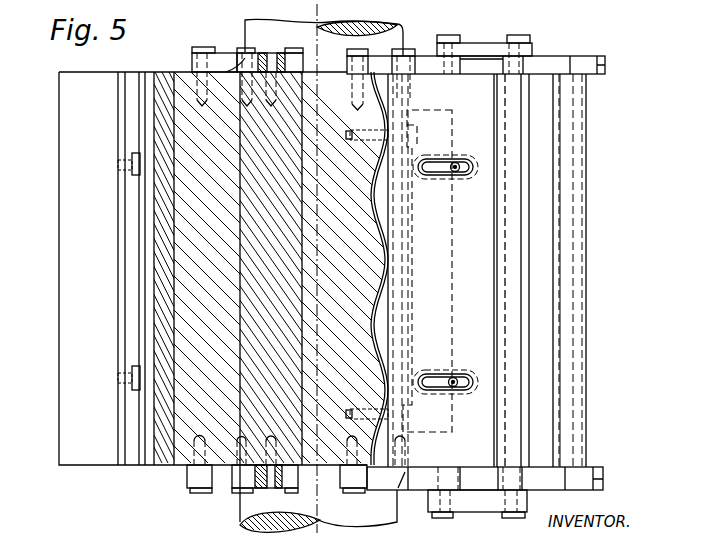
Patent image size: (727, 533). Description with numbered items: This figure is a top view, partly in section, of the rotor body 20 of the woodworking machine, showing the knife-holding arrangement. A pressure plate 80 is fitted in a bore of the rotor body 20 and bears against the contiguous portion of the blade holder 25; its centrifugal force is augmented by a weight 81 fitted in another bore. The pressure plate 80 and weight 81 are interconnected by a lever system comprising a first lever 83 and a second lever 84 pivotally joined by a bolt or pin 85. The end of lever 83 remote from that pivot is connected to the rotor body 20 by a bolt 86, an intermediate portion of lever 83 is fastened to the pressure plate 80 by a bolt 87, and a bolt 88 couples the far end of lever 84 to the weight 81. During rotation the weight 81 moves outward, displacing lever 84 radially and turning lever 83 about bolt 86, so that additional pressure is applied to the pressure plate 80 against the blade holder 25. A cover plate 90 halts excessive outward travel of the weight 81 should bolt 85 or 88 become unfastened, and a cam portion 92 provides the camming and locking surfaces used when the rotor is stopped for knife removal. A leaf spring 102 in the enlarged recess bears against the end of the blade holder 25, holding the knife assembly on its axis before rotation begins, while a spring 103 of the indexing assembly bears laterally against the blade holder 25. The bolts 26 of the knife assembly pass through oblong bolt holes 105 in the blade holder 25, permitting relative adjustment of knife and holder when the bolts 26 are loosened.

The rotor body 20 is at (600, 288).
The blade holder 25 is at (393, 208).
The bolts 26 is at (118, 162).
The pressure plate 80 is at (173, 166).
The weight 81 is at (287, 267).
The first lever 83 is at (425, 63).
The second lever 84 is at (485, 48).
The bolt or pin 85 is at (447, 43).
The bolt 86 is at (357, 48).
The bolt or fastener 87 is at (402, 26).
The bolt or fastener 88 is at (519, 41).
The cover plate 90 is at (560, 364).
The cam portion 92 is at (598, 66).
The leaf spring 102 is at (378, 245).
The spring 103 is at (442, 290).
The oblong bolt holes 105 is at (432, 167).